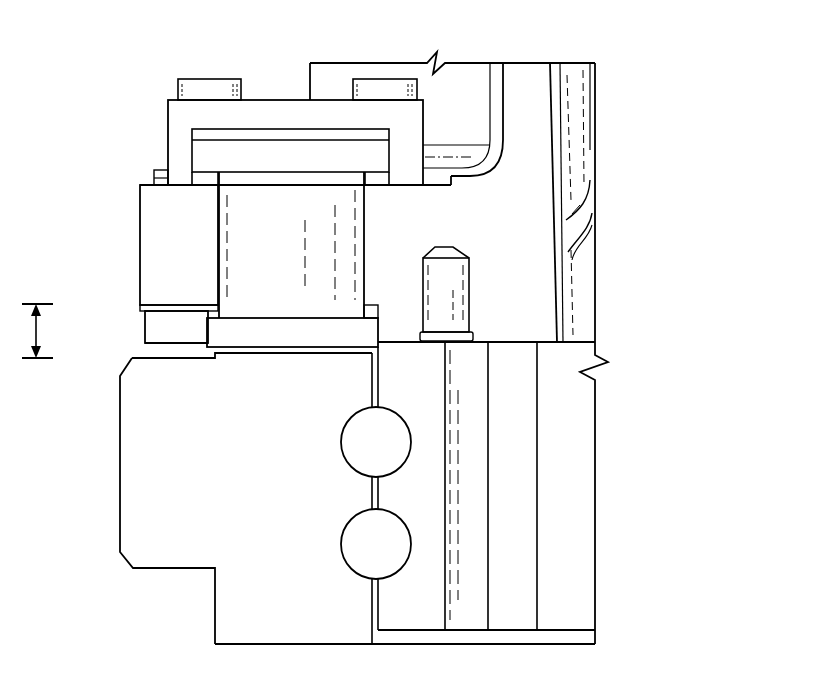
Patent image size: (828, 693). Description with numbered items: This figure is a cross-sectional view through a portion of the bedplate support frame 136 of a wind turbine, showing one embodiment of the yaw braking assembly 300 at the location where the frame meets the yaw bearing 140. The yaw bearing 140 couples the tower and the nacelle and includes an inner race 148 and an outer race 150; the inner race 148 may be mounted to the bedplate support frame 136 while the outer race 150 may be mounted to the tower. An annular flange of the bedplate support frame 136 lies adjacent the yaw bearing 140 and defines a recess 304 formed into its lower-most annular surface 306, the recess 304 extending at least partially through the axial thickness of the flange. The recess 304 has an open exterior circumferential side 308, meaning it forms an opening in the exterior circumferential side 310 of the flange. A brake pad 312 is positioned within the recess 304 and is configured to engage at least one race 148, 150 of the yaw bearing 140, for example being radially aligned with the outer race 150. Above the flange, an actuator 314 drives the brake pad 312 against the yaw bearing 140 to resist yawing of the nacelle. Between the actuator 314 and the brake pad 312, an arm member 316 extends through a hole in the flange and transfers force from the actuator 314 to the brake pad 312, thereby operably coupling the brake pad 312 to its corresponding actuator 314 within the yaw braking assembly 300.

The bedplate support frame 136 is at (533, 73).
The yaw bearing 140 is at (248, 625).
The inner race 148 is at (415, 615).
The outer race 150 is at (153, 550).
The yaw braking assembly 300 is at (682, 128).
The recess 304 is at (162, 328).
The lower-most annular surface 306 is at (178, 345).
The open exterior circumferential side 308 is at (132, 310).
The exterior circumferential side 310 is at (140, 195).
The brake pad 312 is at (225, 337).
The actuator 314 is at (268, 105).
The arm member 316 is at (233, 235).